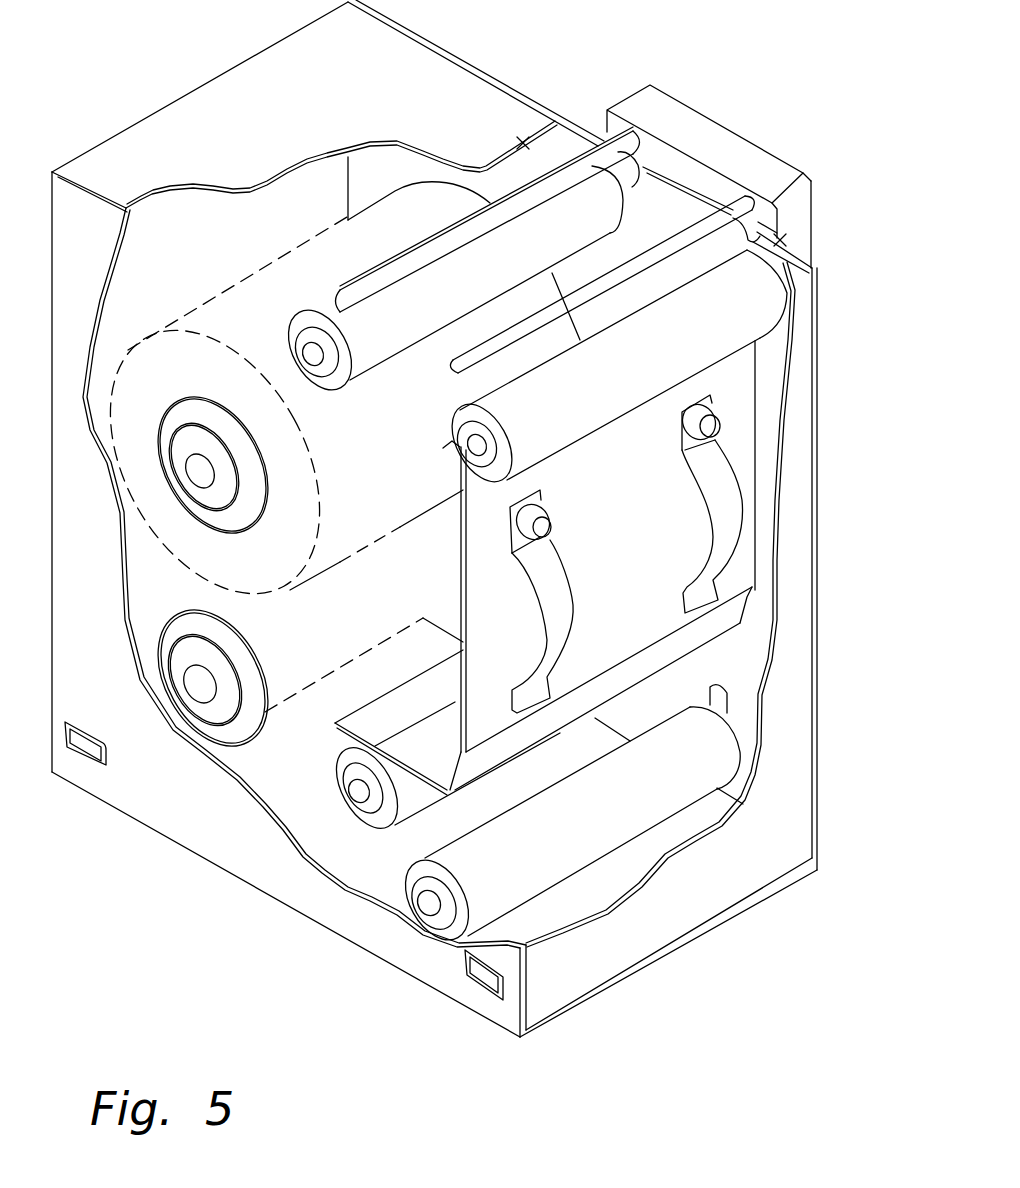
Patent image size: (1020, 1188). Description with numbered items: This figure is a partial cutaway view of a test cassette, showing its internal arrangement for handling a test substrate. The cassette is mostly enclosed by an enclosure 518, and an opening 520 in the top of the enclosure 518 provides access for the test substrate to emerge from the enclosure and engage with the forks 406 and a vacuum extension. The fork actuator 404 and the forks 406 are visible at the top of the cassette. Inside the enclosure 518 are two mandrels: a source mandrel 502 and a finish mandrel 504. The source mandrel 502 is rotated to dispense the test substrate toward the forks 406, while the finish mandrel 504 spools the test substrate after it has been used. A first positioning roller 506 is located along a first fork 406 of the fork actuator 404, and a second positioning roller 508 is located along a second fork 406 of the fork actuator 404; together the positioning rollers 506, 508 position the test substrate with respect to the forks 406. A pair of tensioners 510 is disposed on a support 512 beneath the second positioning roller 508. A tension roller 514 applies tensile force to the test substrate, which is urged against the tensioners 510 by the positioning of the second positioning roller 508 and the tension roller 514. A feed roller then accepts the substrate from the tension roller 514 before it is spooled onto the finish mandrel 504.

The fork actuator 404 is at (714, 135).
The forks 406 is at (430, 256).
The source mandrel 502 is at (198, 470).
The finish mandrel 504 is at (203, 687).
The first positioning roller 506 is at (305, 350).
The second positioning roller 508 is at (460, 475).
The tensioners 510 is at (720, 520).
The support 512 is at (735, 613).
The tension roller 514 is at (428, 905).
The enclosure 518 is at (207, 83).
The opening 520 is at (522, 143).